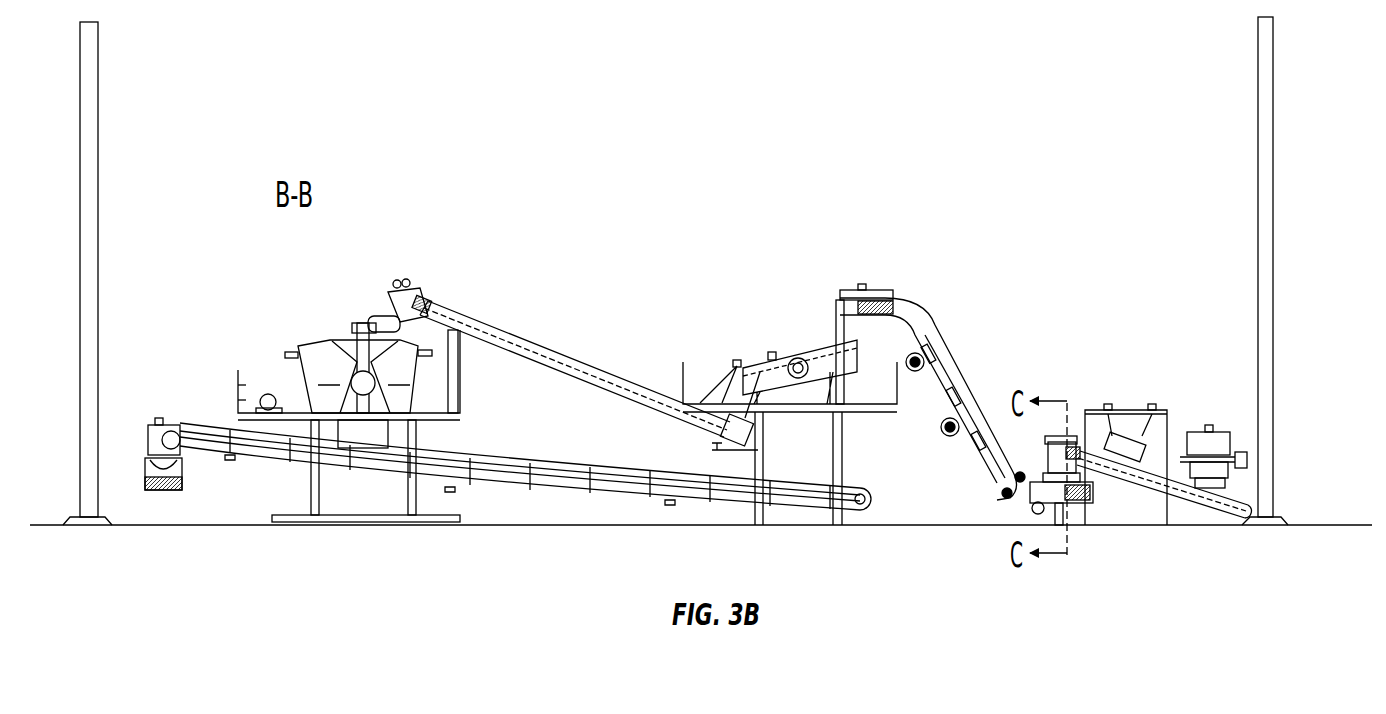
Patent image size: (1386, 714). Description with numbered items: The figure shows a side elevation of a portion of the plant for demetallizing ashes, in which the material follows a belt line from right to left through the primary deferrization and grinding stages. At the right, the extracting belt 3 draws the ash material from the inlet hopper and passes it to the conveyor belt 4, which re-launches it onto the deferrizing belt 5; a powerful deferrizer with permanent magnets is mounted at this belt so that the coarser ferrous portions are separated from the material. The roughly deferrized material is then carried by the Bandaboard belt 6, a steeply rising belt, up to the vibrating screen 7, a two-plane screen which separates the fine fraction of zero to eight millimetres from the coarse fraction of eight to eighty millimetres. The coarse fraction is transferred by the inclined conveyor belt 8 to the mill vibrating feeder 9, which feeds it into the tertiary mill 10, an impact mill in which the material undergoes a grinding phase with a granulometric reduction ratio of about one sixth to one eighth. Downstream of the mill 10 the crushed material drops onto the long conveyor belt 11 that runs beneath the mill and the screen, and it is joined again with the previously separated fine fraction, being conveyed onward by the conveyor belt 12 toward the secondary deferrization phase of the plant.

The extracting belt 3 is at (1225, 433).
The conveyor belt 4 is at (1190, 502).
The deferrizing belt 5 is at (1122, 432).
The Bandaboard belt 6 is at (947, 370).
The vibrating screen 7 is at (775, 372).
The conveyor belt 8 is at (530, 345).
The mill vibrating feeder 9 is at (375, 320).
The tertiary mill 10 is at (338, 358).
The conveyor belt 11 is at (213, 438).
The conveyor belt 12 is at (152, 492).